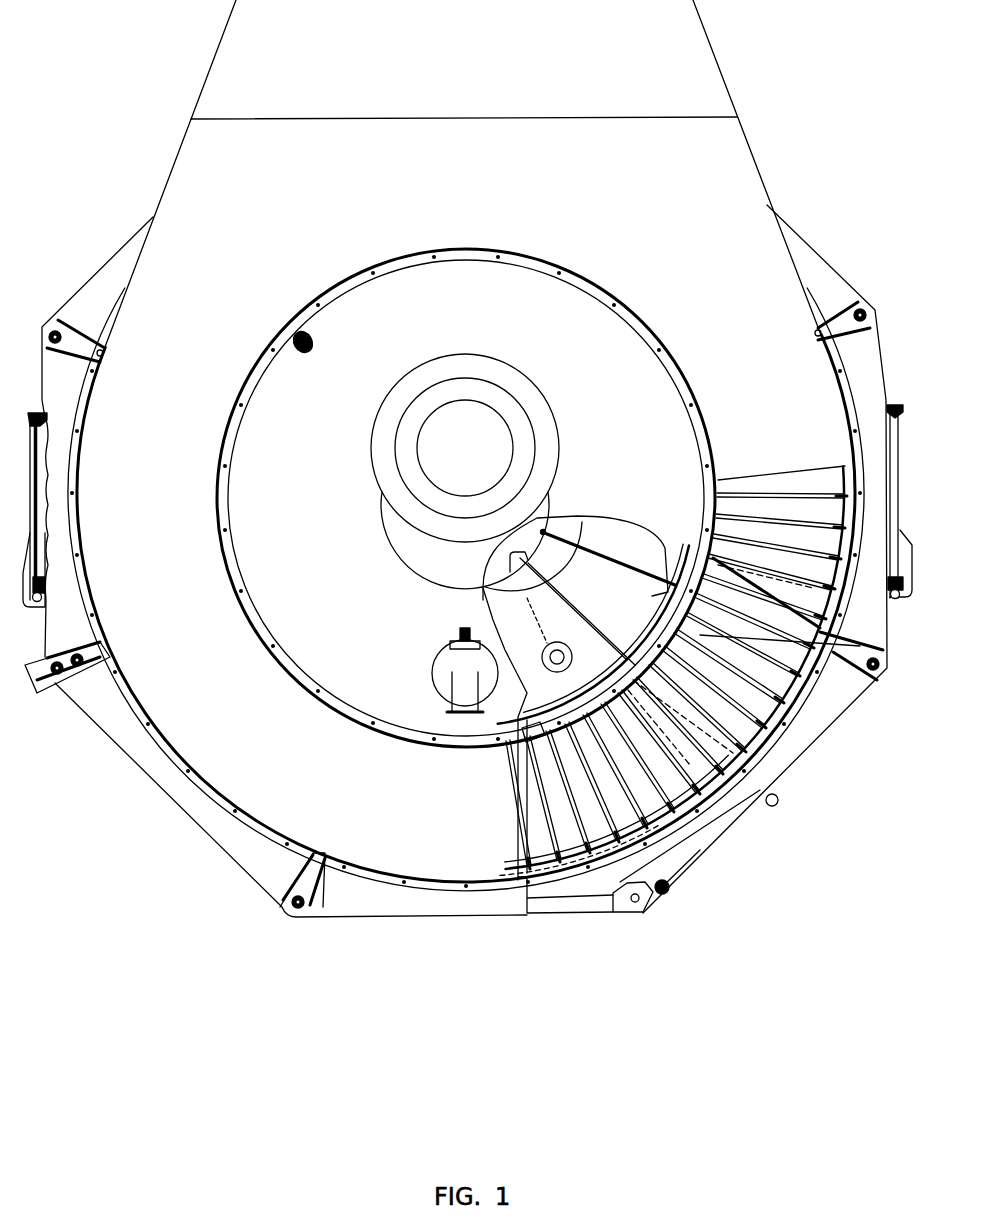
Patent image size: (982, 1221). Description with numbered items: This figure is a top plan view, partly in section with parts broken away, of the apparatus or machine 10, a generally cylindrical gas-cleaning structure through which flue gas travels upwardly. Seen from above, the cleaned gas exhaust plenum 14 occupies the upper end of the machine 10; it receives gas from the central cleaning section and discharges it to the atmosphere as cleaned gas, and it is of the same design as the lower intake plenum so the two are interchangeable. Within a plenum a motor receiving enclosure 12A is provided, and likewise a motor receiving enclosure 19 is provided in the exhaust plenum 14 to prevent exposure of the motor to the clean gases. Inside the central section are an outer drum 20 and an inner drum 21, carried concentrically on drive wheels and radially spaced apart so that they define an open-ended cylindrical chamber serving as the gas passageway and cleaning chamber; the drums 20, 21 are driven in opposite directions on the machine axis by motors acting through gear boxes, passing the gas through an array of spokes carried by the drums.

The apparatus or machine 10 is at (150, 138).
The cleaned gas exhaust plenum 14 is at (743, 155).
The motor receiving enclosure 12A is at (222, 457).
The motor receiving enclosure 19 is at (645, 624).
The outer drum 20 is at (792, 713).
The inner drum 21 is at (530, 735).